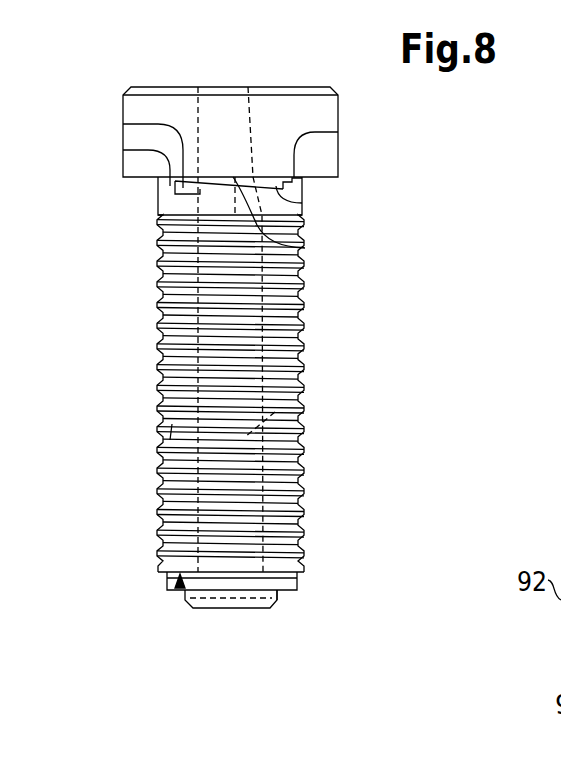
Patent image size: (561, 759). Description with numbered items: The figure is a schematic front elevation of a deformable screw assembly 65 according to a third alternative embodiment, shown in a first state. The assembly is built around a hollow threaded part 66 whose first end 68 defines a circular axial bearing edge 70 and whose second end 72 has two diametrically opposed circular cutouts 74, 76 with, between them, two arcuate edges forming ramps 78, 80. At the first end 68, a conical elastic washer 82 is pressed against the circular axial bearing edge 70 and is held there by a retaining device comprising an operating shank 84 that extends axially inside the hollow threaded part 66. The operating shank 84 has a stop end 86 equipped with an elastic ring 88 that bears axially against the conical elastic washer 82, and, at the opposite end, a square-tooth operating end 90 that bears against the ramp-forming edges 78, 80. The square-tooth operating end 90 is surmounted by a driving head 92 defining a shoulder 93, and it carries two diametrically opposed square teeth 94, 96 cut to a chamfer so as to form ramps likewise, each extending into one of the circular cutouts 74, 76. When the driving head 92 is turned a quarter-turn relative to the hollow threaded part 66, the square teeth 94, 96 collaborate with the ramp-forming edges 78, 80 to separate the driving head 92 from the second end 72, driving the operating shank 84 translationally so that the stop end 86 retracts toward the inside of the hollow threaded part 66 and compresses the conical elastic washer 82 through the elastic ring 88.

The deformable screw assembly 65 is at (118, 318).
The hollow threaded part 66 is at (160, 433).
The first end 68 is at (127, 557).
The circular axial bearing edge 70 is at (180, 583).
The second end 72 is at (131, 207).
The circular cutout 74 is at (123, 124).
The circular cutout 76 is at (250, 87).
The ramp-forming edge 78 is at (123, 150).
The ramp-forming edge 80 is at (338, 132).
The conical elastic washer 82 is at (295, 578).
The operating shank 84 is at (306, 409).
The stop end 86 is at (246, 608).
The elastic ring 88 is at (283, 590).
The square-tooth operating end 90 is at (305, 248).
The driving head 92 is at (167, 106).
The shoulder 93 is at (125, 177).
The square tooth 94 is at (302, 203).
The square tooth 96 is at (198, 87).